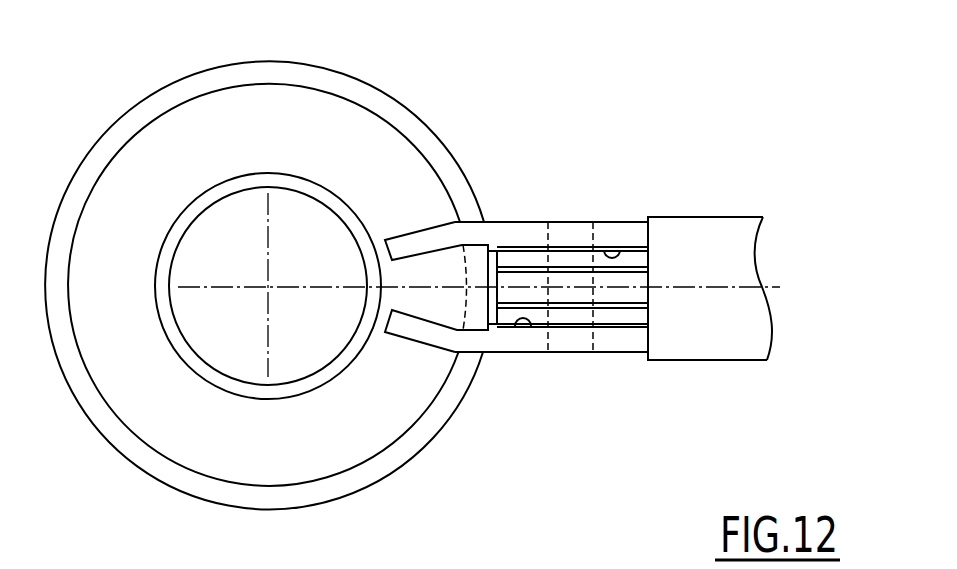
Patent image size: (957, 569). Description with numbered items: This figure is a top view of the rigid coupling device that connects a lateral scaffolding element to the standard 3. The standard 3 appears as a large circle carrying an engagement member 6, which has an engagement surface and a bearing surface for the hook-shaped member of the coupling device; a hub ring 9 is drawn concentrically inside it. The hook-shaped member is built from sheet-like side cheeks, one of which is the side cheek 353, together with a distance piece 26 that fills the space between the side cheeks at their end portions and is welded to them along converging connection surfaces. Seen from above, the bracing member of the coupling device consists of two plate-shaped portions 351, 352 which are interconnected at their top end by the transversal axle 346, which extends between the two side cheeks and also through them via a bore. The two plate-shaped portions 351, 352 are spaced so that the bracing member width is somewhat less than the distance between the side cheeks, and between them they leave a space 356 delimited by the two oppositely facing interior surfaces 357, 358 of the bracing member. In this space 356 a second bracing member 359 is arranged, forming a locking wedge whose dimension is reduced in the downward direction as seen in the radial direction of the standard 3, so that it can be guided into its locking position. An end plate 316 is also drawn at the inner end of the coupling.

The engagement member 6 is at (142, 101).
The standard 3 is at (223, 178).
The hub ring 9 is at (298, 175).
The distance piece 26 is at (443, 272).
The end plate 316 is at (497, 263).
The space 356 is at (518, 273).
The side cheek 353 is at (570, 238).
The interior surface 358 is at (627, 248).
The plate-shaped portion 352 is at (630, 260).
The interior surface 357 is at (517, 324).
The axle 346 is at (577, 303).
The plate-shaped portion 351 is at (608, 318).
The second bracing member 359 is at (630, 295).